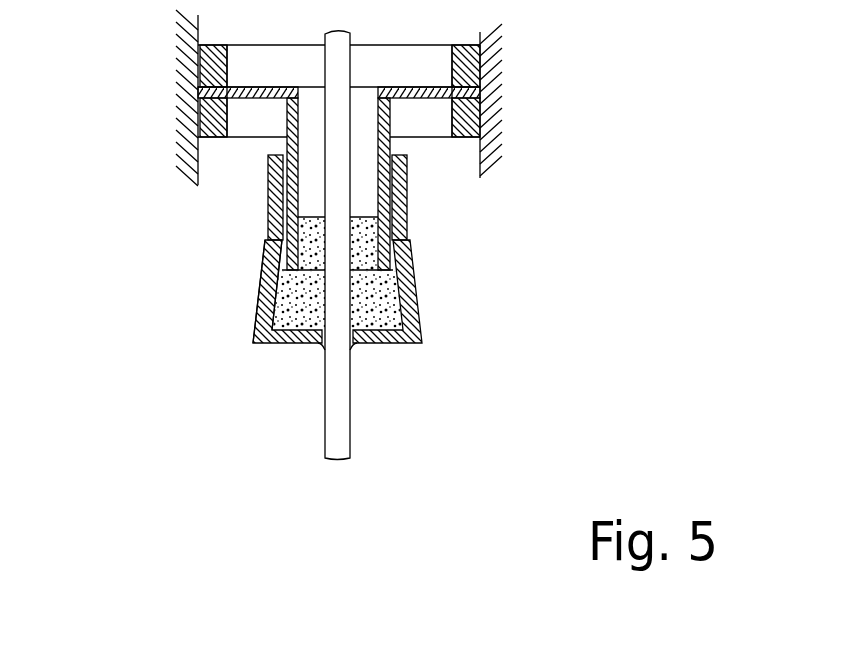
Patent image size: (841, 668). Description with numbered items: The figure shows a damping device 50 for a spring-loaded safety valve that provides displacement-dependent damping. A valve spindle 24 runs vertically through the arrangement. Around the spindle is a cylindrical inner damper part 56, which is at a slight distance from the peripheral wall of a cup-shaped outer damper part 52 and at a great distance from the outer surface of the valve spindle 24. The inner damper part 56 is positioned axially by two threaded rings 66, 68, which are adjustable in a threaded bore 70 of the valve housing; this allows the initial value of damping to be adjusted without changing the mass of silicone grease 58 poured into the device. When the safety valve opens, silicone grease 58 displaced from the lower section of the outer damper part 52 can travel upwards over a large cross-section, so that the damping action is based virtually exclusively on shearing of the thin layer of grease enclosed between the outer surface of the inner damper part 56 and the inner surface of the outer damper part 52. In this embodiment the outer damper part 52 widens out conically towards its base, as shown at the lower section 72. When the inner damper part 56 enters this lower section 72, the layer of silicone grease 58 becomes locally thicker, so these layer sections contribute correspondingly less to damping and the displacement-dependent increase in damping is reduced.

The damping device 50 is at (156, 233).
The threaded bore 70 is at (480, 178).
The threaded ring 66 is at (482, 63).
The threaded ring 68 is at (482, 118).
The inner damper part 56 is at (414, 195).
The outer damper part 52 is at (430, 317).
The lower section 72 is at (263, 307).
The silicone grease 58 is at (385, 300).
The valve spindle 24 is at (325, 401).